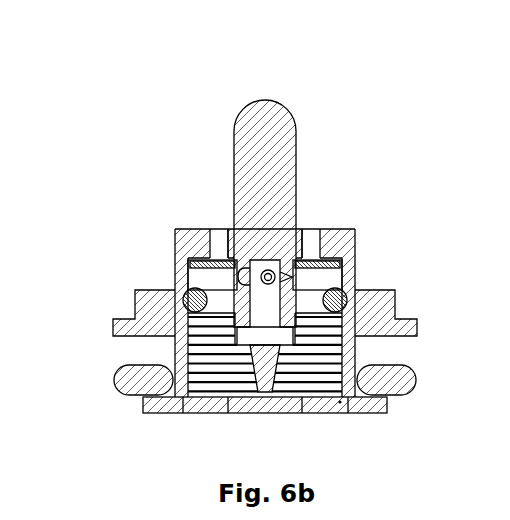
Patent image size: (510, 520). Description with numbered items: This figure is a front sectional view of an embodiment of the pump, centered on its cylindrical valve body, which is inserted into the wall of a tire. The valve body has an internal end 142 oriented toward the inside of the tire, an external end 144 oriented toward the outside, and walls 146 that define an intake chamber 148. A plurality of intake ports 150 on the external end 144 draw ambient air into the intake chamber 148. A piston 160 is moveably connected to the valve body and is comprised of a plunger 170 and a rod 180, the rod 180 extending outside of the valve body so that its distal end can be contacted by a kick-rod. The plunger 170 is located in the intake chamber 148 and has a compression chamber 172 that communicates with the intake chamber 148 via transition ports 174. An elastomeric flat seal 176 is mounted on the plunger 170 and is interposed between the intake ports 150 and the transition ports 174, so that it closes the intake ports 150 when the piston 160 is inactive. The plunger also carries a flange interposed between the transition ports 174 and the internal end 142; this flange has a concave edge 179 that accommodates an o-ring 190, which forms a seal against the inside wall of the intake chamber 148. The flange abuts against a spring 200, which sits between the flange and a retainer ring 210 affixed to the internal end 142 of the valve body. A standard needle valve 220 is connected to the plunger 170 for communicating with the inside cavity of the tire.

The internal end 142 is at (342, 403).
The external end 144 is at (342, 229).
The walls 146 is at (188, 260).
The intake chamber 148 is at (343, 287).
The intake ports 150 is at (220, 229).
The piston 160 is at (224, 257).
The plunger 170 is at (188, 335).
The compression chamber 172 is at (193, 302).
The transition ports 174 is at (237, 276).
The elastomeric flat seal 176 is at (362, 292).
The concave edge 179 is at (345, 305).
The rod 180 is at (298, 162).
The o-ring 190 is at (172, 297).
The spring 200 is at (172, 412).
The retainer ring 210 is at (325, 414).
The needle valve 220 is at (262, 398).